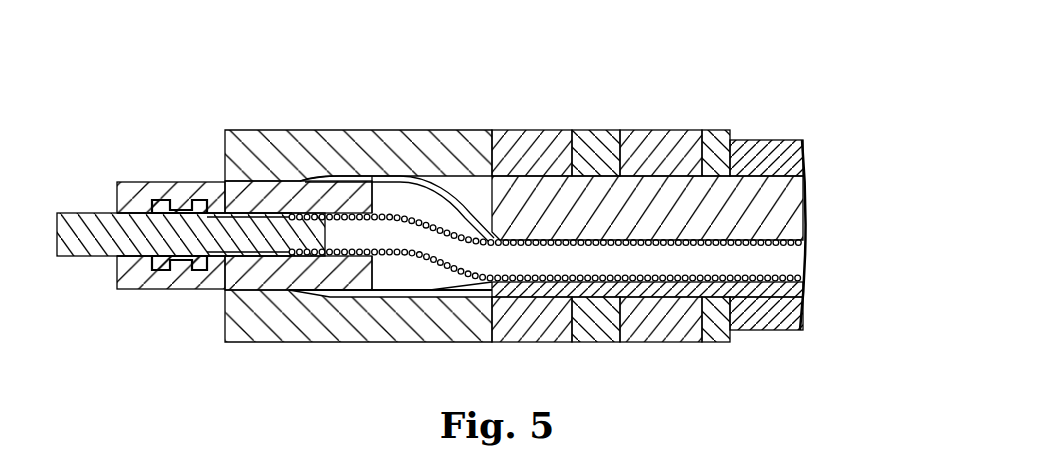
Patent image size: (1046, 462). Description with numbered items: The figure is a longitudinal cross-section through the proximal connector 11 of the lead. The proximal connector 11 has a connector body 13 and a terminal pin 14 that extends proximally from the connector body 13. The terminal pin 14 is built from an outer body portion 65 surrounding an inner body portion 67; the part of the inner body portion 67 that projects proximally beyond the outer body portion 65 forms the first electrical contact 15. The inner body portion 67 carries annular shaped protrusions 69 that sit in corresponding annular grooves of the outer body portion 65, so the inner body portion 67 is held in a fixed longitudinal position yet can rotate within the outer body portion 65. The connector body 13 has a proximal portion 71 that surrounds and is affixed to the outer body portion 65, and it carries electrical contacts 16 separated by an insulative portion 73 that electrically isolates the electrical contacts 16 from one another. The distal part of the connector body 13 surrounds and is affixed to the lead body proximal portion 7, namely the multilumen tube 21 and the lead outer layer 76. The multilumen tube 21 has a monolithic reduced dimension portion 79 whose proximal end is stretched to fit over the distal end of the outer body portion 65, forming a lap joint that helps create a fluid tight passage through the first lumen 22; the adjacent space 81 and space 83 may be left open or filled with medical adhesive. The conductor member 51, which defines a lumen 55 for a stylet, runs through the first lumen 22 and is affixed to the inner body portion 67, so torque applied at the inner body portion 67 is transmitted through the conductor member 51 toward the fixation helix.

The lead body proximal portion 7 is at (765, 155).
The proximal connector 11 is at (457, 220).
The connector body 13 is at (541, 235).
The terminal pin 14 is at (191, 265).
The first electrical contact 15 is at (108, 228).
The electrical contacts 16 is at (637, 135).
The multilumen tube 21 is at (772, 205).
The first lumen 22 is at (778, 246).
The conductor member 51 is at (805, 279).
The lumen 55 is at (780, 260).
The outer body portion 65 is at (177, 202).
The inner body portion 67 is at (132, 270).
The annular shaped protrusions 69 is at (192, 268).
The connector body proximal portion 71 is at (390, 322).
The insulative portion 73 is at (597, 328).
The lead outer layer 76 is at (765, 310).
The reduced dimension portion 79 is at (407, 176).
The space 81 is at (443, 183).
The space 83 is at (412, 274).